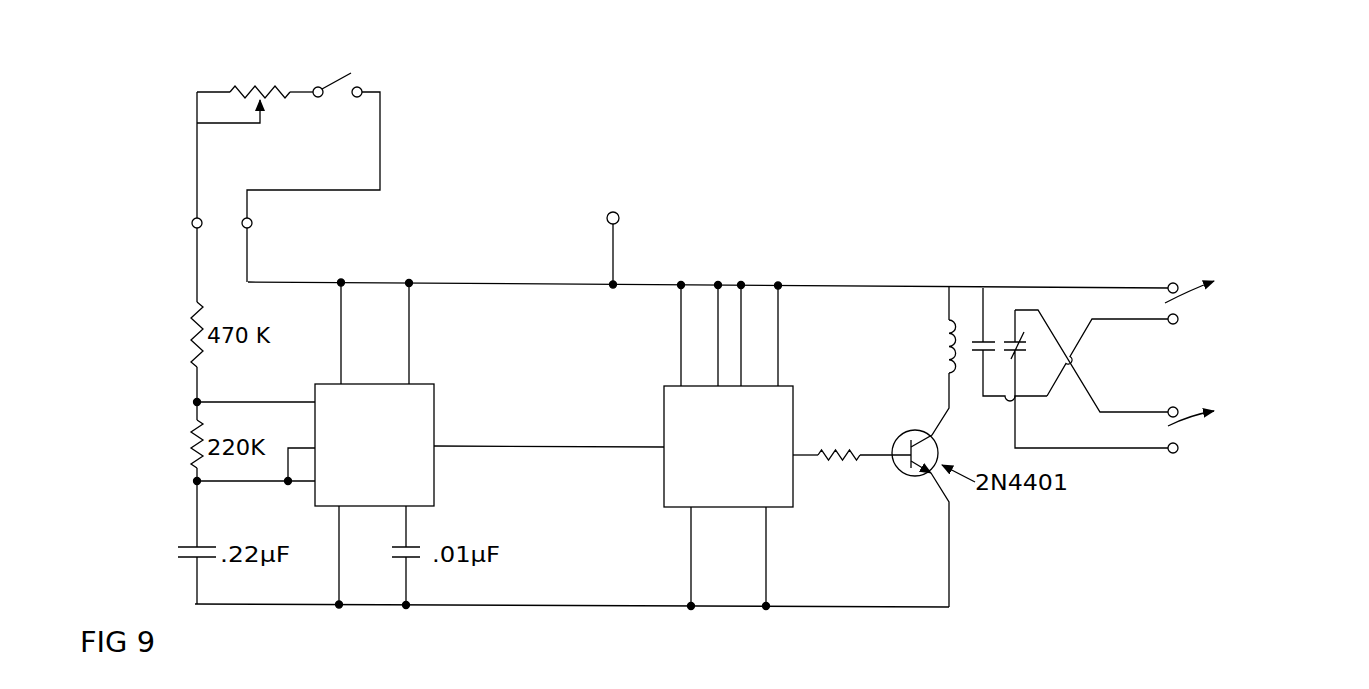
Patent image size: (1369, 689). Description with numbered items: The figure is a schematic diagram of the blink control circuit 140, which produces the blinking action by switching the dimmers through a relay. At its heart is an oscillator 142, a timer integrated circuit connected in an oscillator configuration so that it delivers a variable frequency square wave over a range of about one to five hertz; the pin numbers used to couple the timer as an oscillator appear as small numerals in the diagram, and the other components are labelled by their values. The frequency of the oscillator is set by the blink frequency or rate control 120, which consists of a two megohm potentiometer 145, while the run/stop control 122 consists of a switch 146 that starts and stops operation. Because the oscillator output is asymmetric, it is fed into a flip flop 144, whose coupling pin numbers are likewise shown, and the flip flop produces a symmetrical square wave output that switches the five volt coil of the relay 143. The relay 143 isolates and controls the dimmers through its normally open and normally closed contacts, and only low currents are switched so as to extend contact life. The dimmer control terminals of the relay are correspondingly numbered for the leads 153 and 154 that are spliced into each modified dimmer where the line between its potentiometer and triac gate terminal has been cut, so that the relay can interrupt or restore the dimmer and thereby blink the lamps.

The blink frequency or rate control 120 is at (190, 94).
The run/stop control 122 is at (368, 76).
The potentiometer 145 is at (275, 100).
The switch 146 is at (341, 83).
The blink control circuit 140 is at (880, 181).
The oscillator 142 is at (434, 403).
The flip flop 144 is at (793, 398).
The relay 143 is at (961, 318).
The lead 153 is at (1175, 282).
The lead 154 is at (1178, 324).